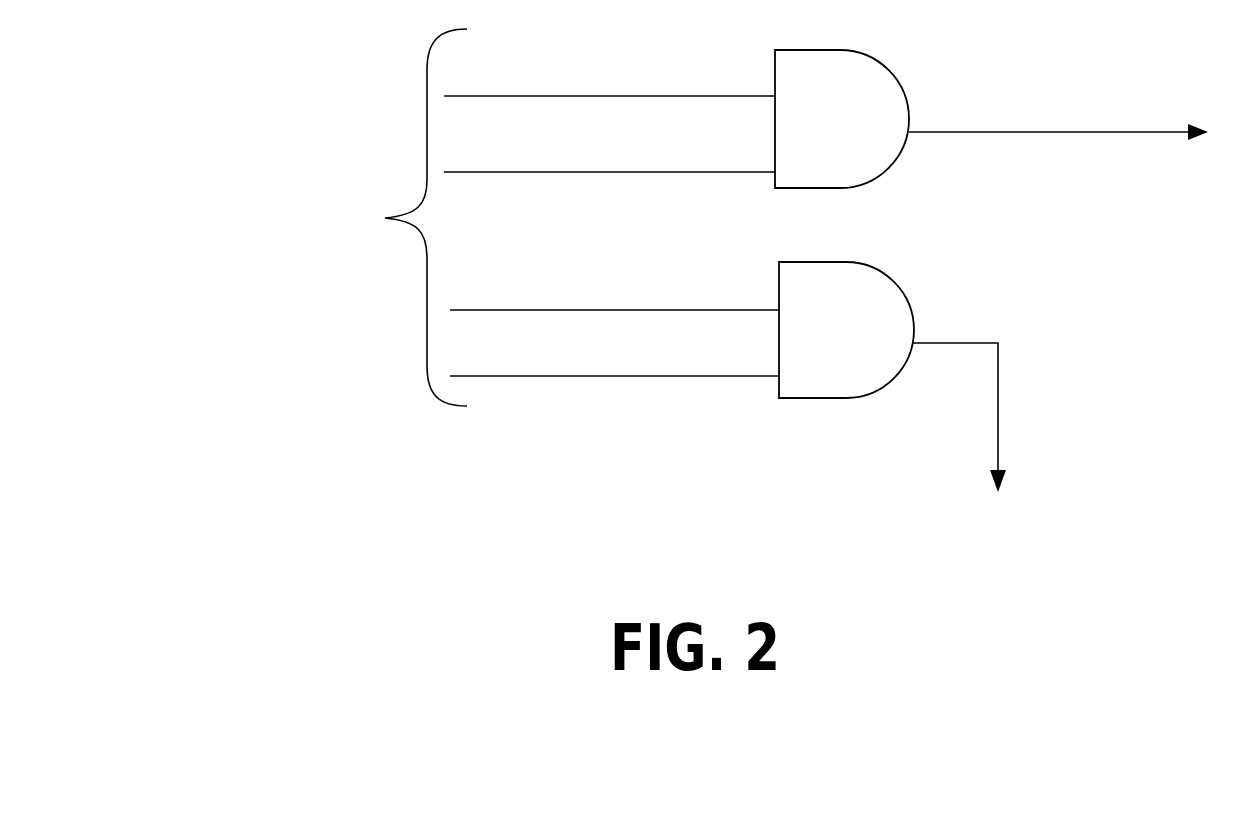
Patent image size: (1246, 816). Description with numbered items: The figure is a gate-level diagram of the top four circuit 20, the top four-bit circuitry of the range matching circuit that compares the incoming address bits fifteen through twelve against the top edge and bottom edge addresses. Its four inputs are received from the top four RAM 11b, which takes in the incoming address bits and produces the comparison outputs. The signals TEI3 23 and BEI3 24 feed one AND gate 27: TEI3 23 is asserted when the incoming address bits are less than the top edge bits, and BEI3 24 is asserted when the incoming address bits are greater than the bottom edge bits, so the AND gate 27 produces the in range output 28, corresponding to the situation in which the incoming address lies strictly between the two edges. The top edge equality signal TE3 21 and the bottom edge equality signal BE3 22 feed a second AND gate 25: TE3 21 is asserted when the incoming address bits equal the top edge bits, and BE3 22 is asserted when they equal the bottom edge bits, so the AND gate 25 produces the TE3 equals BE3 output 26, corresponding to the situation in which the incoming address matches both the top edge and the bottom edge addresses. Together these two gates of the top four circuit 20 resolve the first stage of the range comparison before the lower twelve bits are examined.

The top four RAM 11b is at (259, 217).
The top four circuit 20 is at (418, 500).
The TE3[15:12] 21 is at (614, 288).
The BE3[15:12] 22 is at (614, 354).
The TEI3 23 is at (609, 77).
The BEI3 24 is at (609, 150).
The AND gate 25 is at (846, 330).
The TE3 = BE3 output 26 is at (1058, 417).
The AND gate 27 is at (842, 119).
The in range output 28 is at (1058, 117).